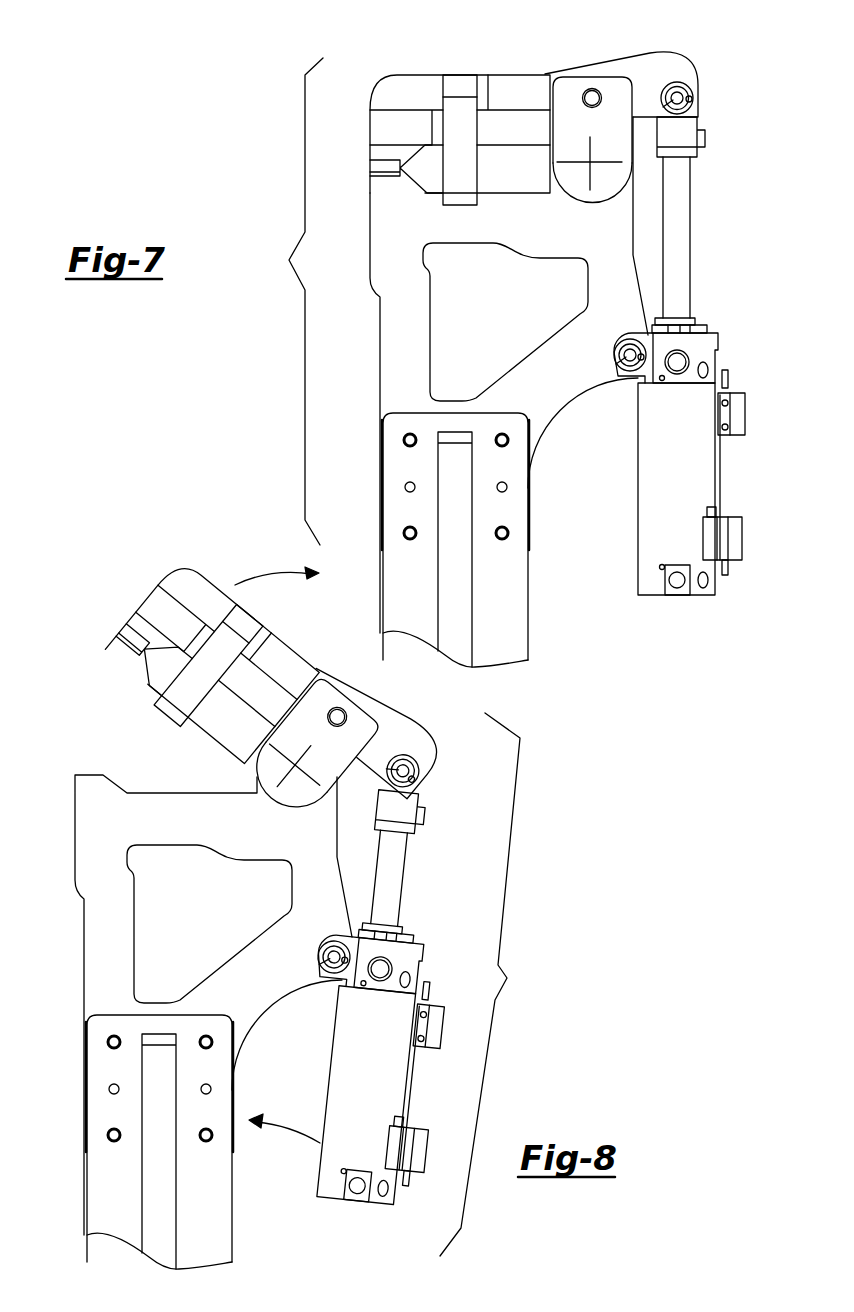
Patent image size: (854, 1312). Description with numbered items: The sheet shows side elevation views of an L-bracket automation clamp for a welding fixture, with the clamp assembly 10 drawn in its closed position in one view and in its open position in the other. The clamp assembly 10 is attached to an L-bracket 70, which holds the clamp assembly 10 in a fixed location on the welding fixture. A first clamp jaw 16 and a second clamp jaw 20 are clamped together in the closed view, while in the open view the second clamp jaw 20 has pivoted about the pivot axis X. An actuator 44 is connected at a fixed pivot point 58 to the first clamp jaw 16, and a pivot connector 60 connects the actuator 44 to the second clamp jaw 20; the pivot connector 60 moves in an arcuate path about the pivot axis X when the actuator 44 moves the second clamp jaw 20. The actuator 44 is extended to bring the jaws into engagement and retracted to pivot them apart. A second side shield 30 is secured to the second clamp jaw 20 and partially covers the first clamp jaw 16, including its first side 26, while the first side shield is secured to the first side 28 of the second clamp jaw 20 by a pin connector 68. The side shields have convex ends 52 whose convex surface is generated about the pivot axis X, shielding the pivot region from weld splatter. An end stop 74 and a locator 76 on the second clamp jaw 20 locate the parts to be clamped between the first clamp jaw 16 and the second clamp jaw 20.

In FIG. 7, the clamp assembly 10 is at (293, 301).
In FIG. 8, the clamp assembly 10 is at (484, 984).
In FIG. 7, the first clamp jaw 16 is at (390, 308).
In FIG. 8, the first clamp jaw 16 is at (92, 966).
In FIG. 7, the second clamp jaw 20 is at (410, 93).
In FIG. 8, the second clamp jaw 20 is at (197, 590).
In FIG. 7, the first side 26 is at (558, 376).
In FIG. 8, the first side 26 is at (257, 984).
In FIG. 7, the first side 28 is at (660, 68).
In FIG. 8, the first side 28 is at (422, 748).
In FIG. 7, the second side shield 30 is at (582, 141).
In FIG. 8, the second side shield 30 is at (313, 738).
In FIG. 7, the actuator 44 is at (685, 484).
In FIG. 8, the actuator 44 is at (372, 1104).
In FIG. 7, the convex ends 52 is at (572, 205).
In FIG. 8, the convex ends 52 is at (273, 803).
In FIG. 7, the fixed pivot point 58 is at (634, 368).
In FIG. 8, the fixed pivot point 58 is at (332, 948).
In FIG. 7, the pivot connector 60 is at (692, 103).
In FIG. 8, the pivot connector 60 is at (418, 777).
In FIG. 7, the pin connector 68 is at (589, 100).
In FIG. 8, the pin connector 68 is at (340, 718).
In FIG. 7, the L-bracket 70 is at (423, 596).
In FIG. 8, the L-bracket 70 is at (120, 1186).
In FIG. 7, the end stop 74 is at (457, 143).
In FIG. 8, the end stop 74 is at (173, 697).
In FIG. 7, the locator 76 is at (522, 137).
In FIG. 8, the locator 76 is at (250, 673).
In FIG. 7, the pivot axis X is at (595, 165).
In FIG. 8, the pivot axis X is at (292, 762).